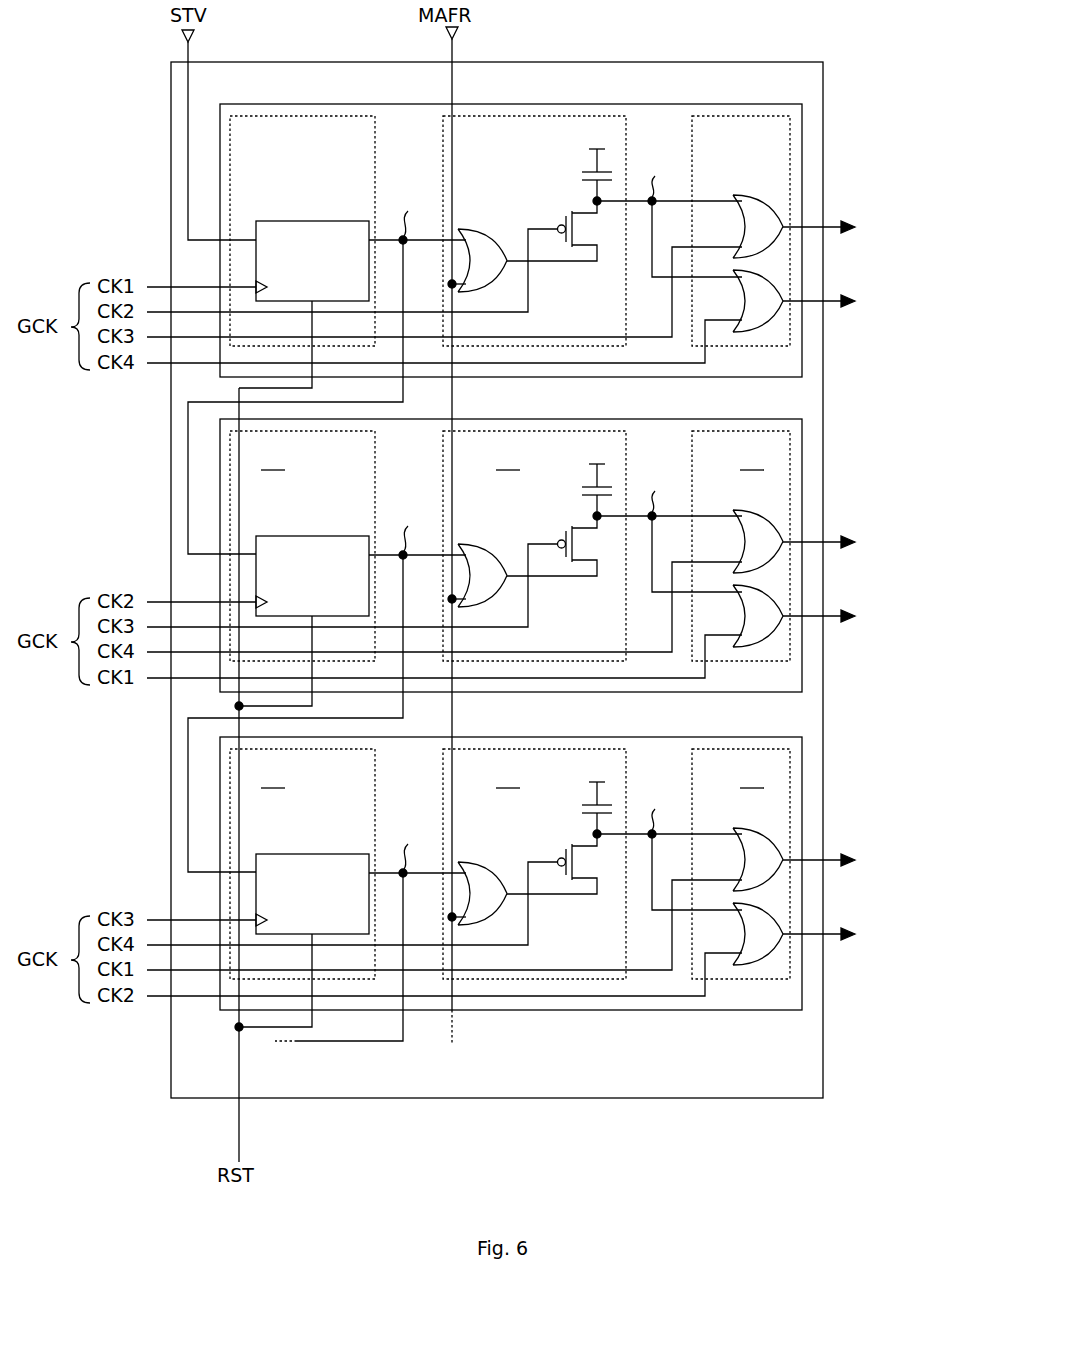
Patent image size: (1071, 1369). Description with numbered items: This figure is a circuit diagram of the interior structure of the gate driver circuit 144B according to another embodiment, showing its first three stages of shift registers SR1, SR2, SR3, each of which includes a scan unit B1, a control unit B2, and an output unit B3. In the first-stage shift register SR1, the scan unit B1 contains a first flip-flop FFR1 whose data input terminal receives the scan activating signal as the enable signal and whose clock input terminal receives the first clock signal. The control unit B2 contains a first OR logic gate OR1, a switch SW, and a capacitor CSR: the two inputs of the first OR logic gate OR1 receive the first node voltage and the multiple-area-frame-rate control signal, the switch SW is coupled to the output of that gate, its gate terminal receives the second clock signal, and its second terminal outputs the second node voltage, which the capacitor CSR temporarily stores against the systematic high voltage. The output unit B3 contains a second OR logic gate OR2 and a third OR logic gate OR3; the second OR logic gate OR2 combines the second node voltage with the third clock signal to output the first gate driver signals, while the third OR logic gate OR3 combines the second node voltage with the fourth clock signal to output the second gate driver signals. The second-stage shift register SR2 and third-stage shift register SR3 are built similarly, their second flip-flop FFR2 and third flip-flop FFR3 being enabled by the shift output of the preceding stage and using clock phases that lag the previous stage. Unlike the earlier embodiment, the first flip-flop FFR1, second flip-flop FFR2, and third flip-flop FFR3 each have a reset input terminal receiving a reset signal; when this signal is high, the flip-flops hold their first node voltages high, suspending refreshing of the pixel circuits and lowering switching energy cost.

The gate driver circuit 144B is at (806, 46).
The first-stage shift register SR1 is at (726, 104).
The second-stage shift register SR2 is at (538, 536).
The third-stage shift register SR3 is at (538, 854).
The scan unit B1 is at (285, 155).
The control unit B2 is at (520, 155).
The output unit B3 is at (764, 155).
The first flip-flop FFR1 is at (330, 276).
The second flip-flop FFR2 is at (312, 576).
The third flip-flop FFR3 is at (312, 894).
The first OR logic gate OR1 is at (482, 230).
The second OR logic gate OR2 is at (776, 188).
The third OR logic gate OR3 is at (749, 304).
The switch SW is at (585, 229).
The capacitor CSR is at (576, 181).